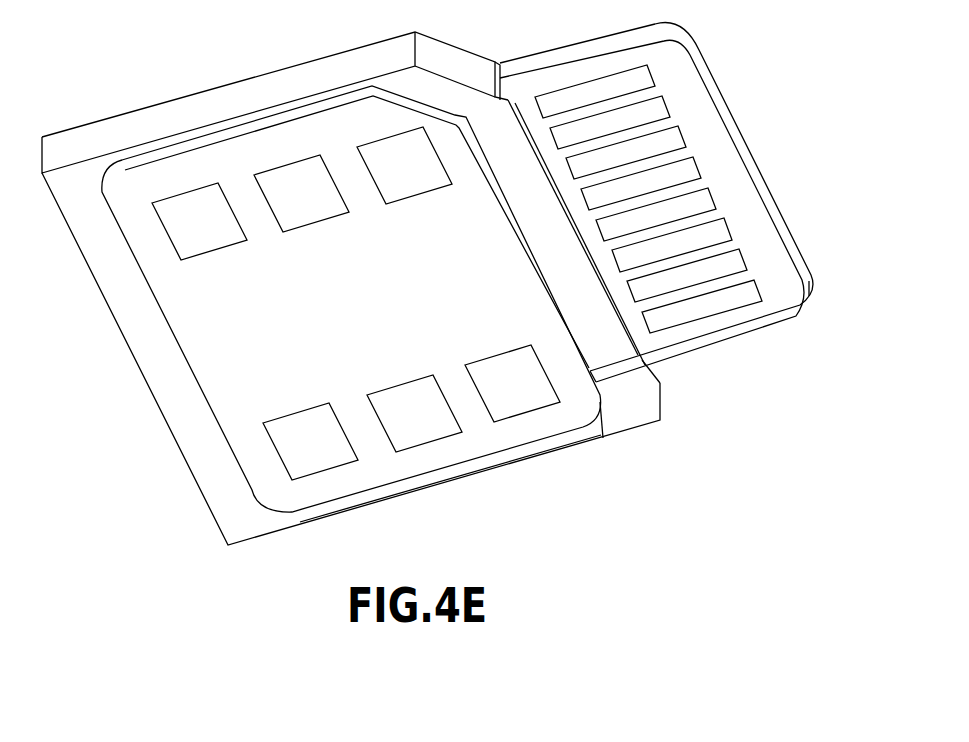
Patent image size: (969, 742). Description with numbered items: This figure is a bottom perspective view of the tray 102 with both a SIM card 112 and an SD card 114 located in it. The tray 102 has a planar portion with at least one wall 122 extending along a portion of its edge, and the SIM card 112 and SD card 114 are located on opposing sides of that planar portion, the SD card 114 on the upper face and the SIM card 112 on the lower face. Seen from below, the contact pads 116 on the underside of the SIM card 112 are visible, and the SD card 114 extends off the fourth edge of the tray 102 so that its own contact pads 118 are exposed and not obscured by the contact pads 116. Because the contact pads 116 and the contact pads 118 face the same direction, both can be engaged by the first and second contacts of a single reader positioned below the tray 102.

The tray 102 is at (135, 46).
The SIM card 112 is at (207, 345).
The SD card 114 is at (715, 348).
The contact pads 116 is at (415, 435).
The contact pads 118 is at (707, 170).
The wall 122 is at (318, 58).